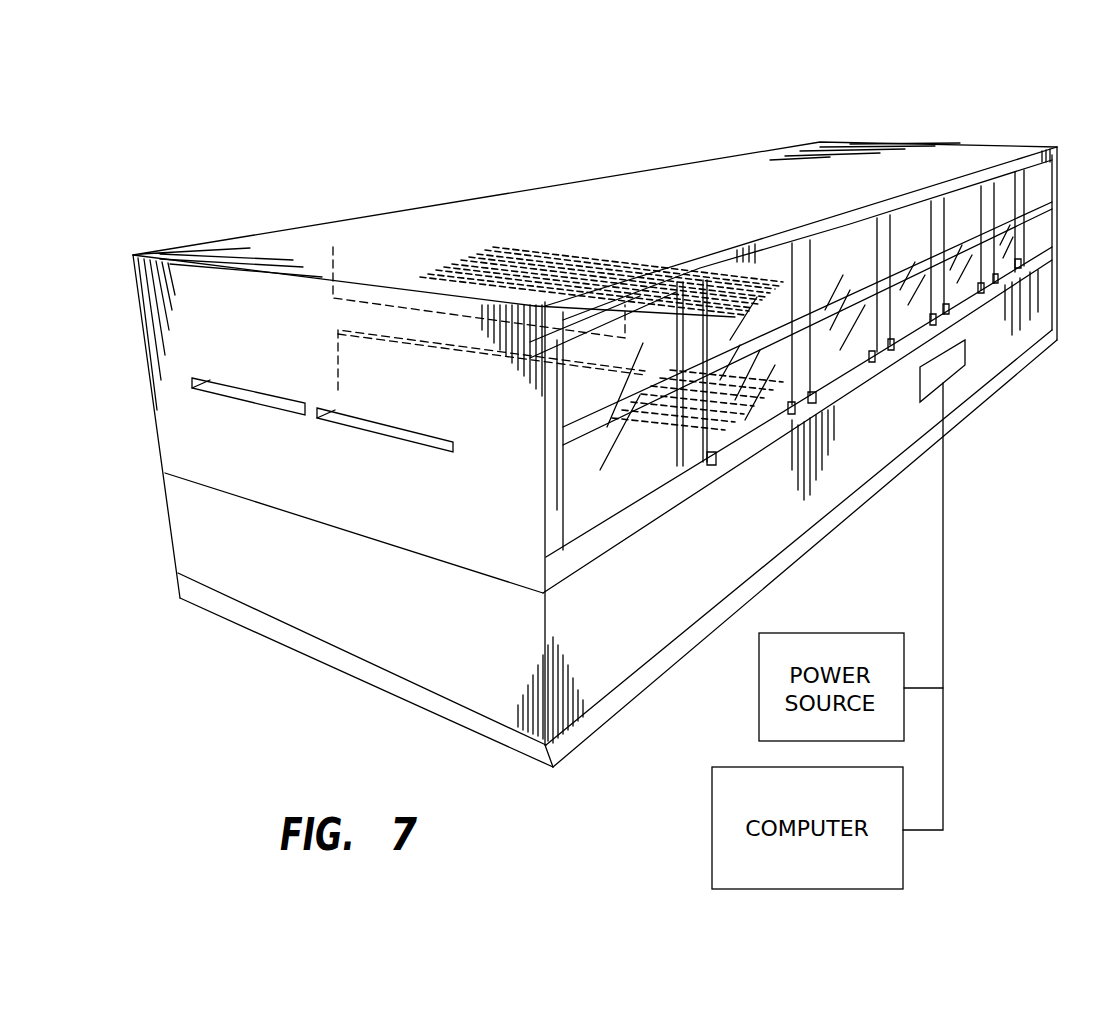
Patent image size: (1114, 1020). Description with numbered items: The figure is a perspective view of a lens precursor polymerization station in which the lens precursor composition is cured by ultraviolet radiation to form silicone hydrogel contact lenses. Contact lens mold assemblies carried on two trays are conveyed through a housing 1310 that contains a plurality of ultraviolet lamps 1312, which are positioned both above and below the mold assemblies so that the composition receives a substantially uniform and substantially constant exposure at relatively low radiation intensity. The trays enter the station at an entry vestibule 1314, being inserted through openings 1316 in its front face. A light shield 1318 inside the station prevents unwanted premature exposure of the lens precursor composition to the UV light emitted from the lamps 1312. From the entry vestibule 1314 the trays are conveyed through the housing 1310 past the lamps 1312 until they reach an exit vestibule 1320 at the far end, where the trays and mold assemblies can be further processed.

The housing 1310 is at (825, 118).
The ultraviolet lamps 1312 is at (702, 292).
The entry vestibule 1314 is at (588, 493).
The openings 1316 is at (257, 400).
The light shield 1318 is at (445, 307).
The exit vestibule 1320 is at (1040, 187).